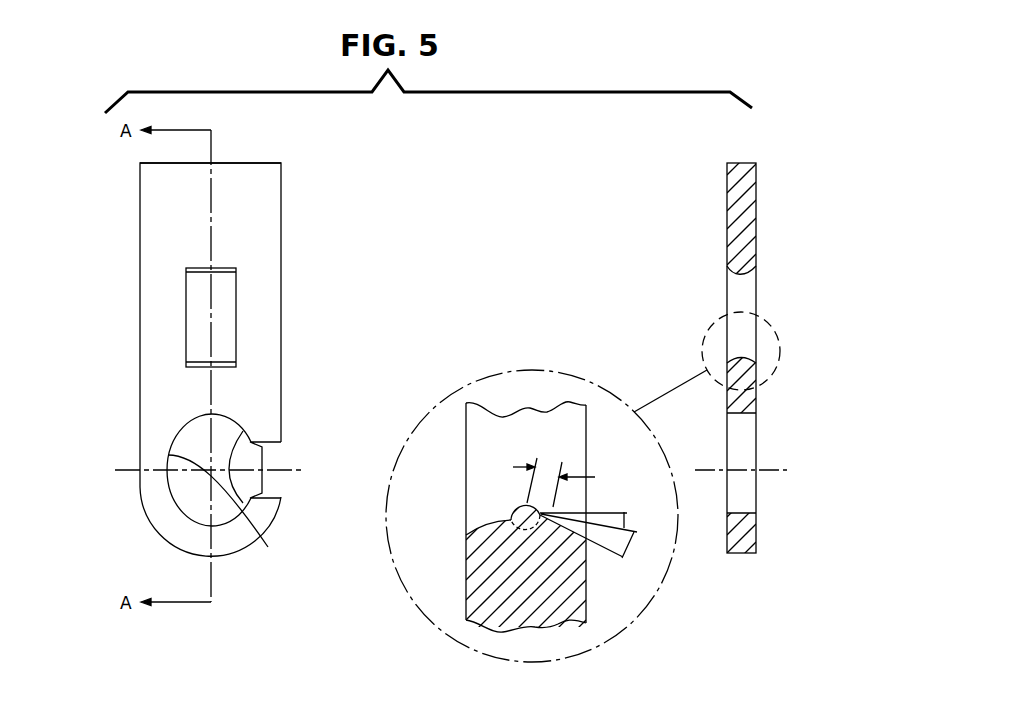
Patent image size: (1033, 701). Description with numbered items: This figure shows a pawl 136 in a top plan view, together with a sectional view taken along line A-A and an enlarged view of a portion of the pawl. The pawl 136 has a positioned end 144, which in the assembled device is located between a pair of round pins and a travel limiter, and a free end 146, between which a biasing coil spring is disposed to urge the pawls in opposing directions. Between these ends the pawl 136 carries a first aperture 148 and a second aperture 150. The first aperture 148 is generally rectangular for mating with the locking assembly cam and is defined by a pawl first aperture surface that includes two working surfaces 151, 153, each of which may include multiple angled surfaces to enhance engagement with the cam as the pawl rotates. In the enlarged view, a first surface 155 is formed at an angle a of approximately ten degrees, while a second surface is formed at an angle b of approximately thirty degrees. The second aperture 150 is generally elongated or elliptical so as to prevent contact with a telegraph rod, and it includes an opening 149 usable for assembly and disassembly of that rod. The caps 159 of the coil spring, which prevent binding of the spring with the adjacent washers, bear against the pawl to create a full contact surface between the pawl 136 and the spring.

The pawl 136 is at (128, 381).
The positioned end 144 is at (240, 163).
The free end 146 is at (170, 541).
The first aperture 148 is at (263, 420).
The opening 149 is at (262, 478).
The second aperture 150 is at (239, 516).
The working surface 151 is at (222, 277).
The working surface 153 is at (222, 362).
The first surface 155 is at (511, 514).
The cap 159 is at (480, 530).
The angle a is at (624, 520).
The angle b is at (628, 546).